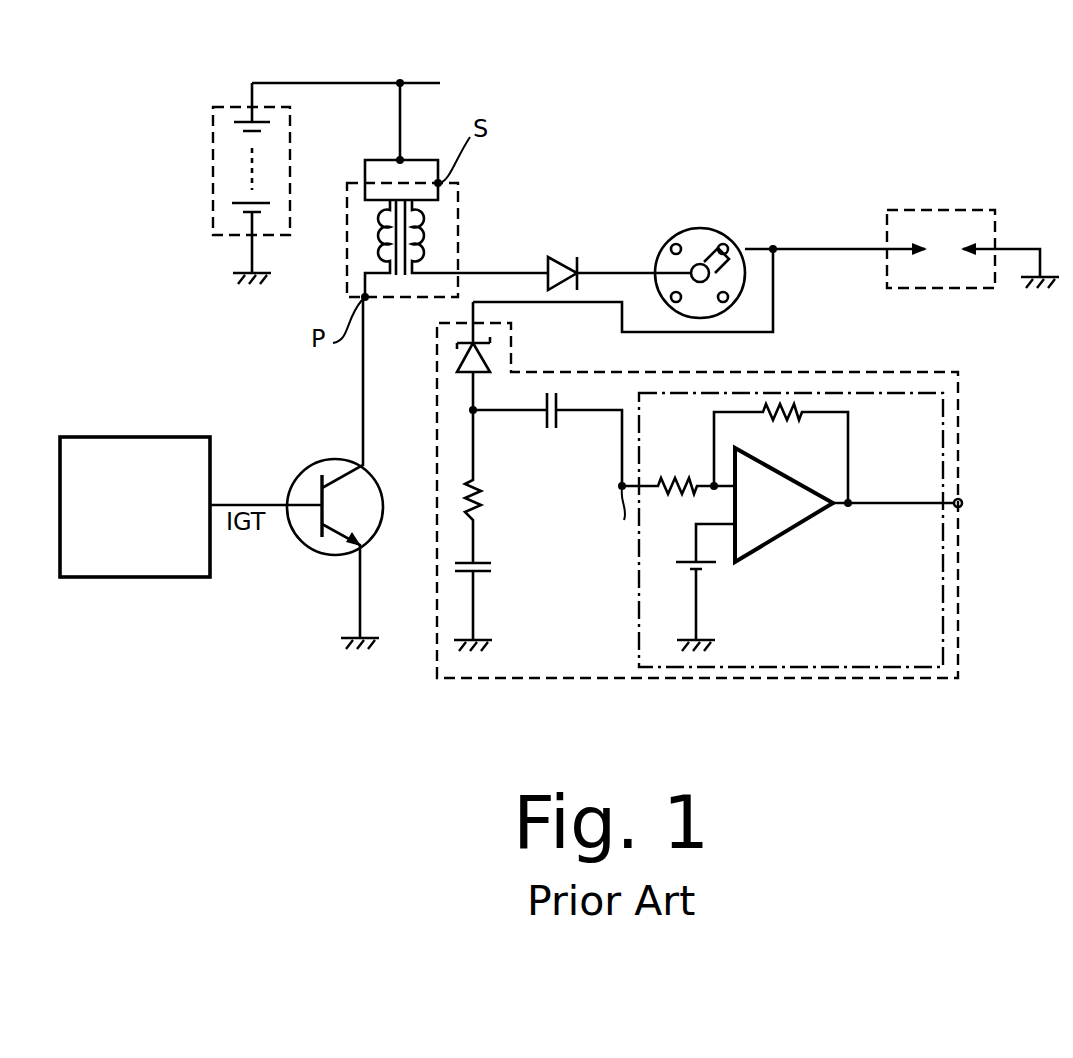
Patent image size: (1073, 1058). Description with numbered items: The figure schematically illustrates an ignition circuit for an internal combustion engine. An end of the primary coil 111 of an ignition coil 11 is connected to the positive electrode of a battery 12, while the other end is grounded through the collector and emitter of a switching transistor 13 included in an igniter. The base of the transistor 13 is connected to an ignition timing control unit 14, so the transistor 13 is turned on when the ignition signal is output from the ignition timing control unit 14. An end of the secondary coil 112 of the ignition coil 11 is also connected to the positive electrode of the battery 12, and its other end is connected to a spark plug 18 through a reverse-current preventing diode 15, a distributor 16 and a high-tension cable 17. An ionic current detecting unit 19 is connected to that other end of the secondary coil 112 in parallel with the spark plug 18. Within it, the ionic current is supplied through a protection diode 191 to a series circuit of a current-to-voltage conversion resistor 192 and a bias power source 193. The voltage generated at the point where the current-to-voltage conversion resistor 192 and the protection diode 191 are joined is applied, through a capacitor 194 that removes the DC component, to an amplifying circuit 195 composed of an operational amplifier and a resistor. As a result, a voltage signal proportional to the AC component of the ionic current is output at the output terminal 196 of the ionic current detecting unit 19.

The ignition coil 11 is at (415, 228).
The primary coil 111 is at (358, 240).
The secondary coil 112 is at (440, 242).
The battery 12 is at (214, 145).
The switching transistor 13 is at (370, 472).
The ignition timing control unit 14 is at (175, 437).
The reverse-current preventing diode 15 is at (565, 262).
The distributor 16 is at (707, 228).
The high-tension cable 17 is at (827, 250).
The spark plug 18 is at (962, 210).
The ionic current detecting unit 19 is at (743, 490).
The protection diode 191 is at (483, 358).
The current-to-voltage conversion resistor 192 is at (485, 498).
The bias power source 193 is at (490, 570).
The capacitor 194 is at (553, 432).
The amplifying circuit 195 is at (637, 620).
The output terminal 196 is at (963, 503).